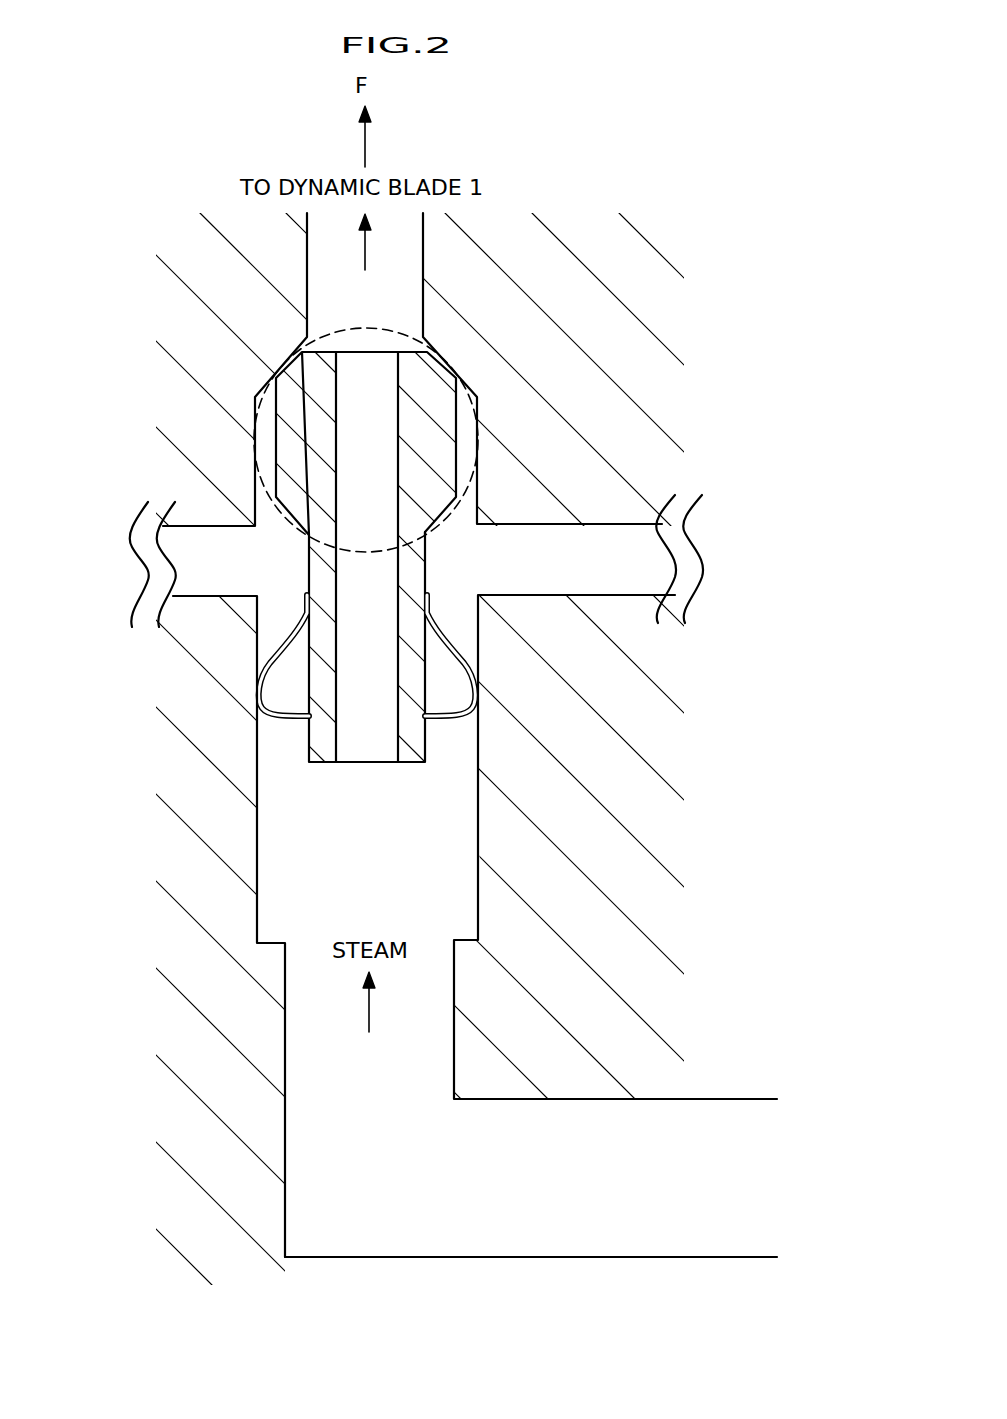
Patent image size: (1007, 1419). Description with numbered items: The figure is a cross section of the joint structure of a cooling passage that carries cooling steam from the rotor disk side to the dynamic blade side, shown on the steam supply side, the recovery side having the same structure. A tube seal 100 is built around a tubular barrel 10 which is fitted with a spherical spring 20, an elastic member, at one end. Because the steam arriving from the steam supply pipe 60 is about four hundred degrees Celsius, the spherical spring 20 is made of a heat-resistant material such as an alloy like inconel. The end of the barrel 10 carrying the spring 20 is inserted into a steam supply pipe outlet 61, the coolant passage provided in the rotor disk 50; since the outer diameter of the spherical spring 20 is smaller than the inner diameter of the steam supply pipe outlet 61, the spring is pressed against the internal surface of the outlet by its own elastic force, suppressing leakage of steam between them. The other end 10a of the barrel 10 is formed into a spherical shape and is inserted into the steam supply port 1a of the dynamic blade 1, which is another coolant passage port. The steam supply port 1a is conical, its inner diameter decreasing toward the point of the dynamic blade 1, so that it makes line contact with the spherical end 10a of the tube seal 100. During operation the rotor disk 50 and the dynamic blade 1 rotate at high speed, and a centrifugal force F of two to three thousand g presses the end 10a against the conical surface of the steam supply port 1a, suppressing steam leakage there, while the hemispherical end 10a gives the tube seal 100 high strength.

The dynamic blade 1 is at (602, 423).
The steam supply port 1a is at (243, 417).
The tubular barrel 10 is at (412, 510).
The end of the barrel 10a is at (307, 368).
The spherical spring 20 is at (258, 690).
The rotor disk 50 is at (605, 845).
The steam supply pipe 60 is at (667, 1238).
The steam supply pipe outlet 61 is at (489, 642).
The tube seal 100 is at (284, 576).